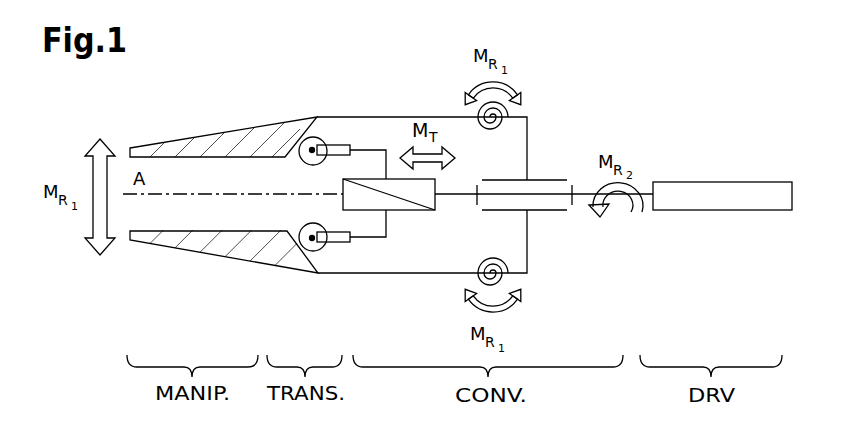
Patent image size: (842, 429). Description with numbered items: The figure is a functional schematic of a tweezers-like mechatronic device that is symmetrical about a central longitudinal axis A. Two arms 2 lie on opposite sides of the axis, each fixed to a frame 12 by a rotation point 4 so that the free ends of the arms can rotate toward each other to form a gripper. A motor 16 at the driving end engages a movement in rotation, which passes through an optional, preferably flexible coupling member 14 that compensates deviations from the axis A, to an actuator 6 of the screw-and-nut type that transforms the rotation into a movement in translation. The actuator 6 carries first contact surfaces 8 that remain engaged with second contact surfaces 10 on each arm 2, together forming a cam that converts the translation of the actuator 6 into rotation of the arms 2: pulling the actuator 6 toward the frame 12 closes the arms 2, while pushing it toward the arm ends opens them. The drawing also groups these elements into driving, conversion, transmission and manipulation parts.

The arm 2 is at (210, 142).
The rotation point 4 is at (483, 107).
The actuator 6 is at (378, 179).
The first contact surface 8 is at (313, 140).
The second contact surface 10 is at (290, 150).
The frame 12 is at (528, 243).
The coupling member 14 is at (581, 194).
The motor 16 is at (713, 188).